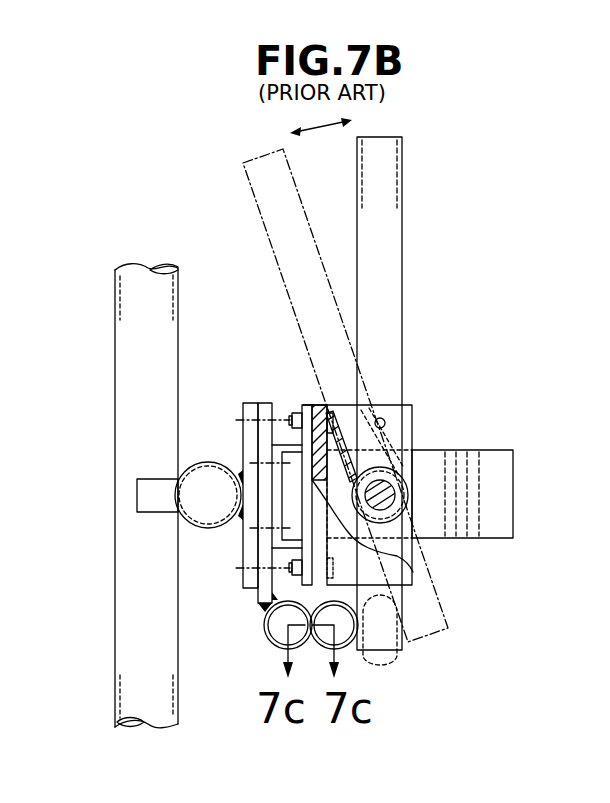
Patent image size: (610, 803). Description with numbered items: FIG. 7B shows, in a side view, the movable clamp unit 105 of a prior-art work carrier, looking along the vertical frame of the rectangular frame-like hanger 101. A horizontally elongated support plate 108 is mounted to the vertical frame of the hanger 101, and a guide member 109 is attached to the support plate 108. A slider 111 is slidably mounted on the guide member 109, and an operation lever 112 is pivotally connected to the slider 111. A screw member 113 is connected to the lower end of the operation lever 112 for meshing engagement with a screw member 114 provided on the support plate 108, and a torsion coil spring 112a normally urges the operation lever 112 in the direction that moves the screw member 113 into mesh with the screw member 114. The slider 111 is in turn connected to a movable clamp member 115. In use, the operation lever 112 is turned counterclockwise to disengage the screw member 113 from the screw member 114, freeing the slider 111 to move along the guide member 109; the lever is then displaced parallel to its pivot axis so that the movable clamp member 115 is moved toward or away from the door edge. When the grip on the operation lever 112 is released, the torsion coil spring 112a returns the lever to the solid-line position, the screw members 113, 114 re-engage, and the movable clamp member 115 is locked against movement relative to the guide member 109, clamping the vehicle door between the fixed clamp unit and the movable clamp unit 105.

The hanger 101 is at (115, 466).
The movable clamp unit 105 is at (490, 331).
The support plate 108 is at (268, 403).
The guide member 109 is at (285, 440).
The slider 111 is at (413, 571).
The operation lever 112 is at (252, 190).
The torsion coil spring 112a is at (412, 477).
The screw member 113 is at (347, 648).
The screw member 114 is at (268, 637).
The movable clamp member 115 is at (497, 450).